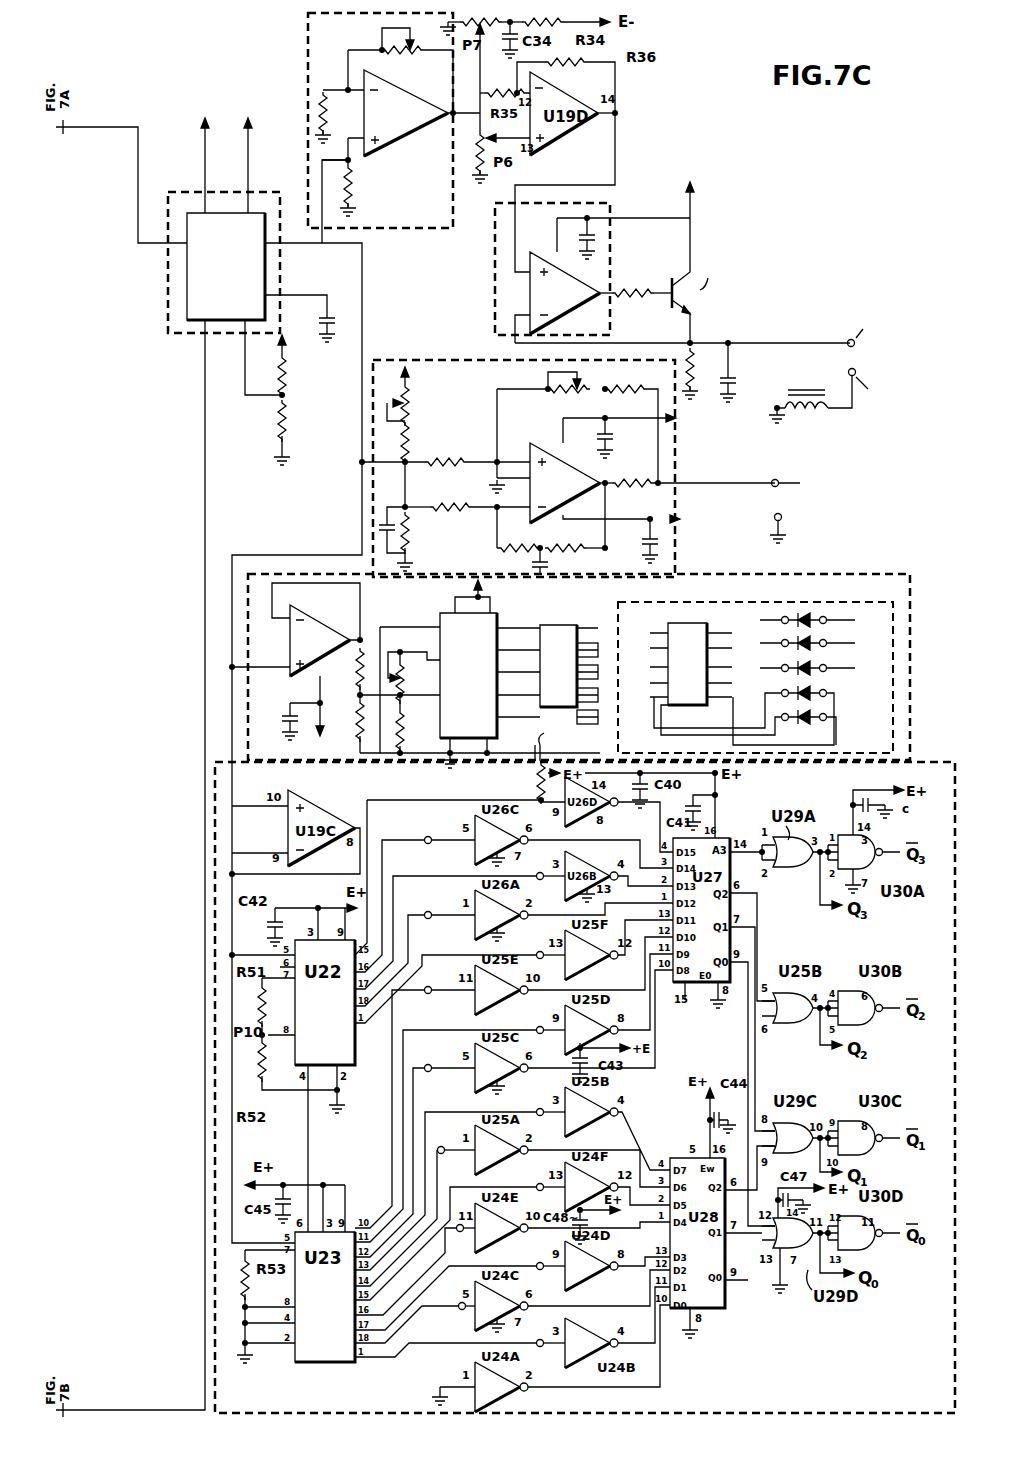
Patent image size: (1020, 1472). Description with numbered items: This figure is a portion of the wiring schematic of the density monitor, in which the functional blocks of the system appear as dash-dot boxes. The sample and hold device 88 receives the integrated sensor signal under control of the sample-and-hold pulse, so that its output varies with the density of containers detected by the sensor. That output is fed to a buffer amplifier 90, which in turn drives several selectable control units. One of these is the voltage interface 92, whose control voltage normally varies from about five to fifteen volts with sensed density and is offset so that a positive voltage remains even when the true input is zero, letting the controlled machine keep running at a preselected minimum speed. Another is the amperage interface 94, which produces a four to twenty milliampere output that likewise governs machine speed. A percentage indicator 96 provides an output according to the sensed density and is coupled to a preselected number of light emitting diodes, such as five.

The sample and hold device 88 is at (168, 333).
The buffer amplifier 90 is at (307, 36).
The voltage interface 92 is at (610, 205).
The amperage interface 94 is at (432, 360).
The percentage indicator 96 is at (264, 574).